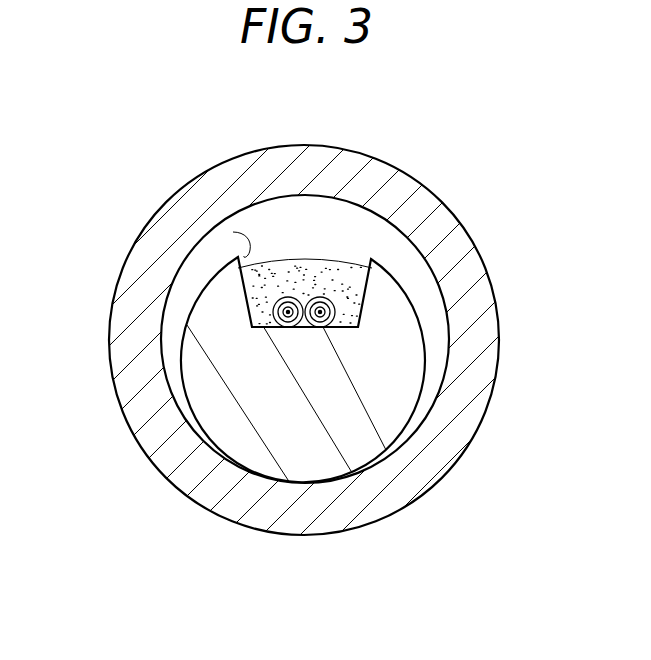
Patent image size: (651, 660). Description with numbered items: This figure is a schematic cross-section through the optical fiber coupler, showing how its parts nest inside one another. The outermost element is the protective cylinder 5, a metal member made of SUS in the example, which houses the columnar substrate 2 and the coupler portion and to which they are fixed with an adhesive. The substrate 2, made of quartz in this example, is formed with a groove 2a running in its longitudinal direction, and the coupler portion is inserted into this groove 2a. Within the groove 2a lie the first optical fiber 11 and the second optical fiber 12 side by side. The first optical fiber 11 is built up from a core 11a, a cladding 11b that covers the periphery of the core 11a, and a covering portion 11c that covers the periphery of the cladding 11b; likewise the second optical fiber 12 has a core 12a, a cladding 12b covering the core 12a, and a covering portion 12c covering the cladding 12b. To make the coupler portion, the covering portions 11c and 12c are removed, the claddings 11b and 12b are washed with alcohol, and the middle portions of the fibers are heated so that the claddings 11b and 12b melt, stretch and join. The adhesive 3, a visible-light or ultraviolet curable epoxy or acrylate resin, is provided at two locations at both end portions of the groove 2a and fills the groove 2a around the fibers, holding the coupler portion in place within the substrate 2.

The substrate 2 is at (300, 448).
The groove 2a is at (233, 232).
The adhesive 3 is at (348, 270).
The protective cylinder 5 is at (473, 258).
The first optical fiber 11 is at (320, 297).
The core 11a is at (328, 330).
The cladding 11b is at (329, 319).
The covering portion 11c is at (333, 304).
The second optical fiber 12 is at (288, 296).
The core 12a is at (287, 327).
The cladding 12b is at (279, 309).
The covering portion 12c is at (275, 304).